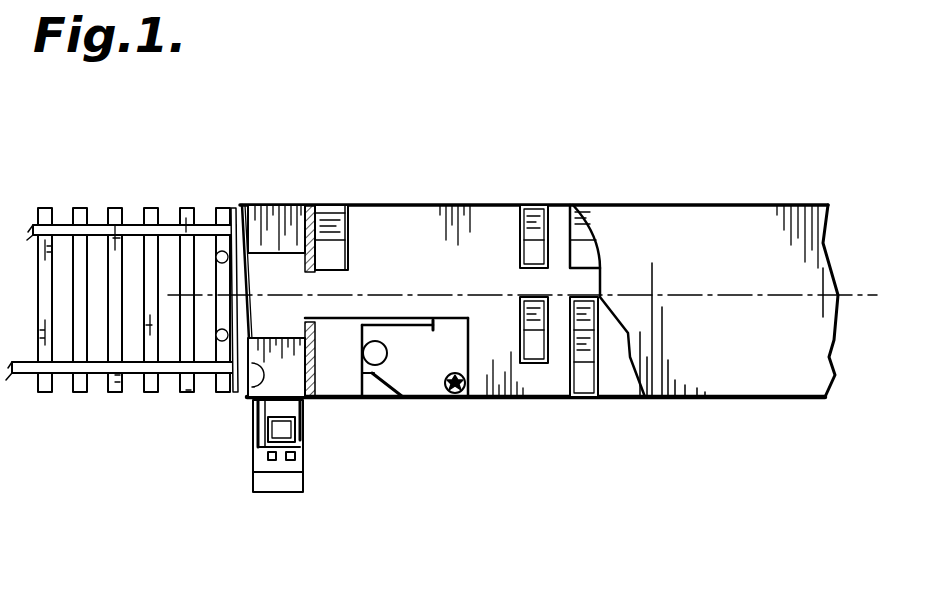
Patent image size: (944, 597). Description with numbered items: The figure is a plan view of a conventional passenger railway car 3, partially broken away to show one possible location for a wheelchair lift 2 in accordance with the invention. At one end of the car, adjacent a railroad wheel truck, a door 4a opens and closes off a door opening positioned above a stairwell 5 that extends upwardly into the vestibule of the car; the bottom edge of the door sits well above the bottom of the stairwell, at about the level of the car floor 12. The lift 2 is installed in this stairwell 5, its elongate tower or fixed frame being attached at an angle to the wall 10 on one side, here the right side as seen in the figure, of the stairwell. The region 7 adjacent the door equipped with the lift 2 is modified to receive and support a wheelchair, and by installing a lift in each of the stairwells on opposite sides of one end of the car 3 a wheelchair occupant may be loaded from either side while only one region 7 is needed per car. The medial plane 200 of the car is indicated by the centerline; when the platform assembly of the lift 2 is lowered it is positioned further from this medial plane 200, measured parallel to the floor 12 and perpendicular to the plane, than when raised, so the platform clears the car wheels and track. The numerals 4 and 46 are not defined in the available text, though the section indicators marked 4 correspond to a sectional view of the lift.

The wheelchair lift 2 is at (241, 467).
The passenger railway car 3 is at (507, 399).
The section line 4- 4 is at (285, 165).
The door 4a is at (332, 400).
The stairwell 5 is at (252, 382).
The region 7 is at (407, 362).
The wall 10 is at (303, 326).
The floor 12 is at (285, 287).
The top wall 46 is at (282, 206).
The medial plane 200 is at (860, 299).